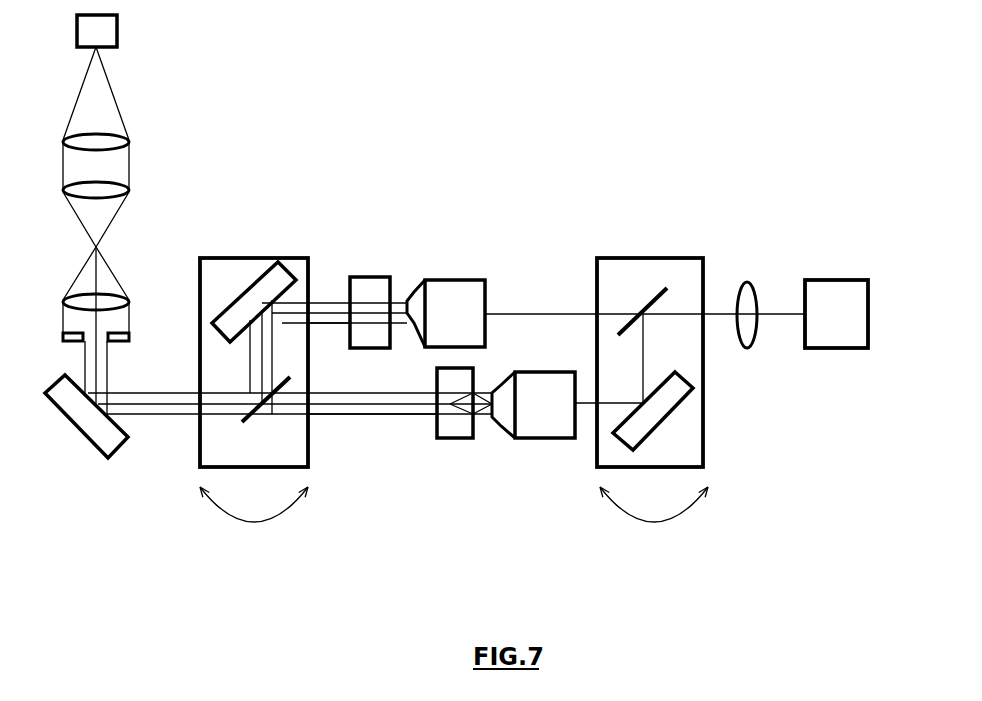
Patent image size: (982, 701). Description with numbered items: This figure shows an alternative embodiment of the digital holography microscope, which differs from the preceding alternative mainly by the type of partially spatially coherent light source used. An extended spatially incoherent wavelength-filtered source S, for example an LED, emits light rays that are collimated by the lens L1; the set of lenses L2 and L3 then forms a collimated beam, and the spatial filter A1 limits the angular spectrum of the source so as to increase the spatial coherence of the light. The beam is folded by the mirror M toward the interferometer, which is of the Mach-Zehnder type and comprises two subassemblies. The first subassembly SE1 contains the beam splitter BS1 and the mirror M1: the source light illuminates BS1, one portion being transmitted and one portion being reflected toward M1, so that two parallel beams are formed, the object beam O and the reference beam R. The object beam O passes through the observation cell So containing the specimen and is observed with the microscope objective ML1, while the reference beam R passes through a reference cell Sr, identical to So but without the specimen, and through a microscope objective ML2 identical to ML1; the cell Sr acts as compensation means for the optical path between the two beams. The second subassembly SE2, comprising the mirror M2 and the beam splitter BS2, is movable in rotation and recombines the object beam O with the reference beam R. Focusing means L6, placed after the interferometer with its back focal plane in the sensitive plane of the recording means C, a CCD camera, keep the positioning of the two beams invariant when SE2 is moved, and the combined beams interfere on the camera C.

The source S is at (109, 31).
The lens L1 is at (73, 138).
The lens L2 is at (73, 185).
The lens L3 is at (73, 304).
The spatial filter A1 is at (77, 344).
The mirror M is at (86, 416).
The first subassembly SE1 is at (254, 369).
The mirror M1 is at (252, 302).
The first beam splitter BS1 is at (266, 415).
The reference beam R is at (329, 329).
The object beam O is at (372, 414).
The reference cell Sr is at (370, 295).
The microscope objective ML2 is at (446, 291).
The observation cell So is at (464, 417).
The microscope objective ML1 is at (533, 419).
The second subassembly SE2 is at (652, 373).
The second beam splitter BS2 is at (638, 304).
The mirror M2 is at (653, 413).
The focusing means L6 is at (750, 296).
The recording means C is at (836, 294).